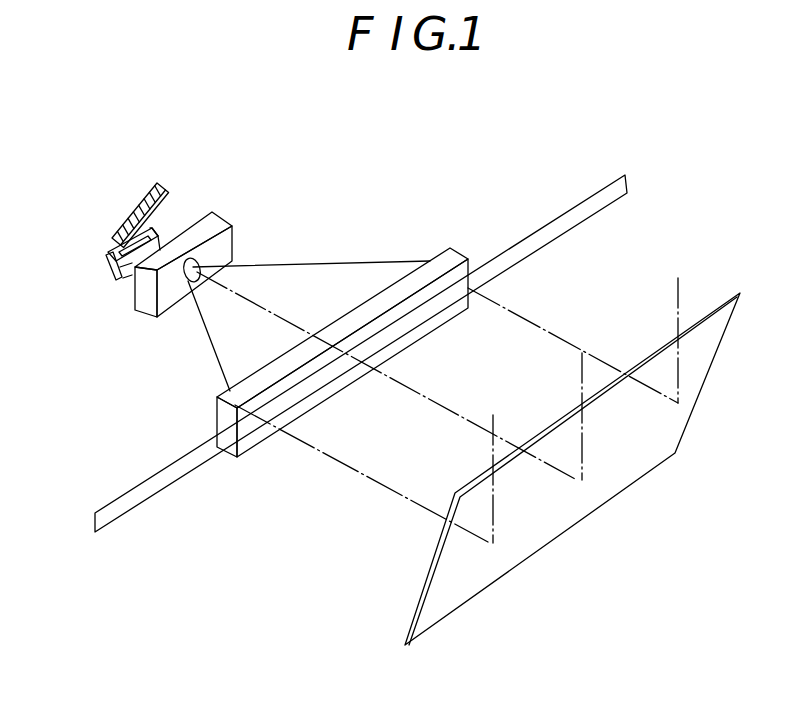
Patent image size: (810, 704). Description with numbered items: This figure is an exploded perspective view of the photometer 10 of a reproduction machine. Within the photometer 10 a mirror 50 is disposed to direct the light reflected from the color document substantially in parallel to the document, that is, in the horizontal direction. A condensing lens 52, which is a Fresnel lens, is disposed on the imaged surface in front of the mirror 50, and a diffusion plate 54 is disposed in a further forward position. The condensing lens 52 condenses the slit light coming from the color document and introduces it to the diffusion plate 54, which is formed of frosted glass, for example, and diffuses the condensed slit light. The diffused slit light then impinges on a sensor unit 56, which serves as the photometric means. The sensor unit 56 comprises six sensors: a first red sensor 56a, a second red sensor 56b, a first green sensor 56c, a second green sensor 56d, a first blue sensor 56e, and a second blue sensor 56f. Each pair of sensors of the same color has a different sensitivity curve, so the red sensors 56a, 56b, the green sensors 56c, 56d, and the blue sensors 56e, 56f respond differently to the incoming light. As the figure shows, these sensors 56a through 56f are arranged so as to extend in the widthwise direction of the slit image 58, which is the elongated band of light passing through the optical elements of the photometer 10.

The photometer 10 is at (485, 182).
The mirror 50 is at (657, 453).
The condensing lens 52 is at (243, 443).
The diffusion plate 54 is at (222, 245).
The sensor unit 56 is at (130, 193).
The first red sensor 56a is at (160, 188).
The second red sensor 56b is at (157, 221).
The first green sensor 56c is at (167, 221).
The second green sensor 56d is at (108, 260).
The first blue sensor 56e is at (120, 265).
The second blue sensor 56f is at (133, 282).
The slit image 58 is at (603, 193).